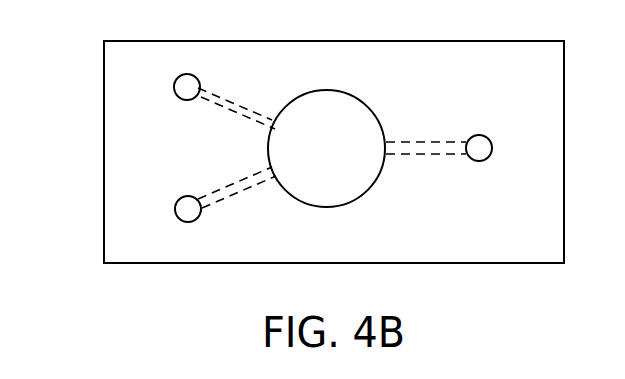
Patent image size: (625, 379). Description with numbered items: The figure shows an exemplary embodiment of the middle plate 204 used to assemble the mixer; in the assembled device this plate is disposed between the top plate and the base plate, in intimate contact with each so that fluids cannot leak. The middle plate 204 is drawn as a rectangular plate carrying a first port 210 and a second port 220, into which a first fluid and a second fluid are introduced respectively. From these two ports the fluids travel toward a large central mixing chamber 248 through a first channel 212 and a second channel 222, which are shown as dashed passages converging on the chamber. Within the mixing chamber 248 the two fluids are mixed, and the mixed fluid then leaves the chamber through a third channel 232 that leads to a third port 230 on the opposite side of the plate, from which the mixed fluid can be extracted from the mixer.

The middle plate 204 is at (116, 244).
The first port 210 is at (175, 211).
The first channel 212 is at (230, 196).
The second port 220 is at (174, 86).
The second channel 222 is at (231, 103).
The third port 230 is at (479, 140).
The third channel 232 is at (417, 156).
The mixing chamber 248 is at (348, 109).